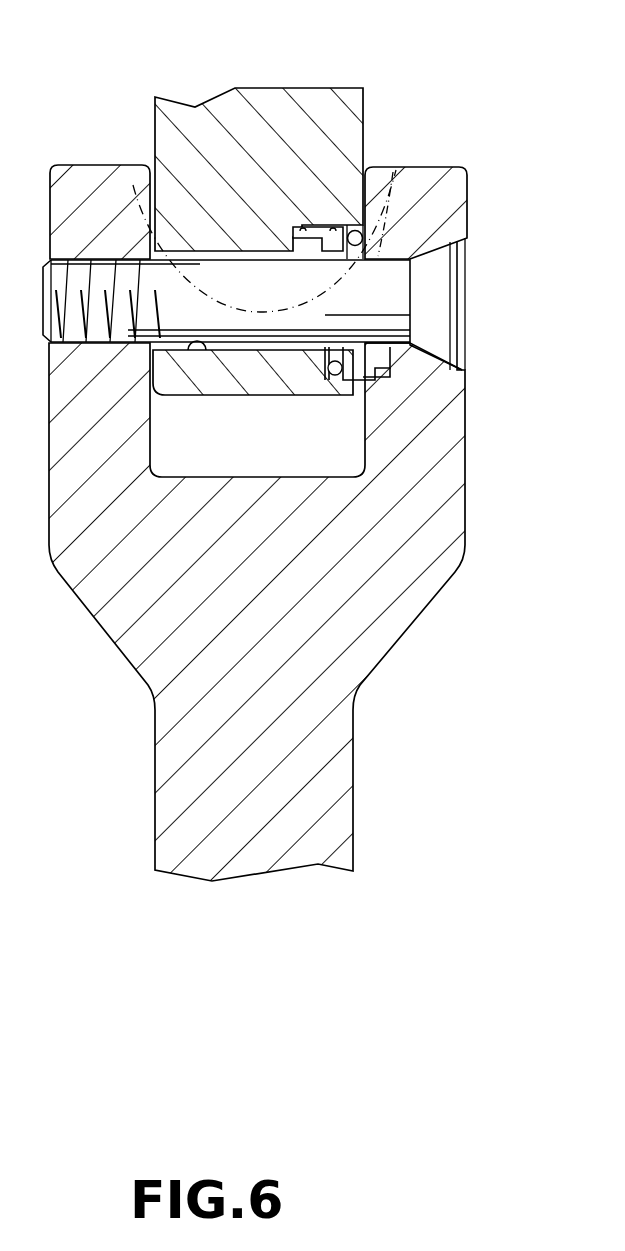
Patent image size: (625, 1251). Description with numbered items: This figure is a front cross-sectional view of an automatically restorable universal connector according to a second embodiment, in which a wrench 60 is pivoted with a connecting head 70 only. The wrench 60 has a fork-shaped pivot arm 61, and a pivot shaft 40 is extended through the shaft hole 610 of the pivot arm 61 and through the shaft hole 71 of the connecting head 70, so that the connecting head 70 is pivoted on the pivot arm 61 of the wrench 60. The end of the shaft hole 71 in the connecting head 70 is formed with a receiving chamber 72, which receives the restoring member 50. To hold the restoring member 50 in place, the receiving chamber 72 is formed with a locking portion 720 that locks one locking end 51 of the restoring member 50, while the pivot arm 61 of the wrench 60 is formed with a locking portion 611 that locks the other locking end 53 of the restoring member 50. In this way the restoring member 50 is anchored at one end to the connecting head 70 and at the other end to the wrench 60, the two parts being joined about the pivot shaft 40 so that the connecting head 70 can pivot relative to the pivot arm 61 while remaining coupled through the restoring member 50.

The pivot shaft 40 is at (263, 335).
The restoring member 50 is at (373, 240).
The locking end 51 is at (292, 224).
The locking end 53 is at (352, 388).
The wrench 60 is at (450, 455).
The pivot arm 61 is at (448, 184).
The connecting head 70 is at (352, 124).
The shaft hole 71 is at (196, 340).
The receiving chamber 72 is at (372, 232).
The shaft hole 610 is at (437, 348).
The locking portion 611 is at (386, 375).
The locking portion 720 is at (303, 220).